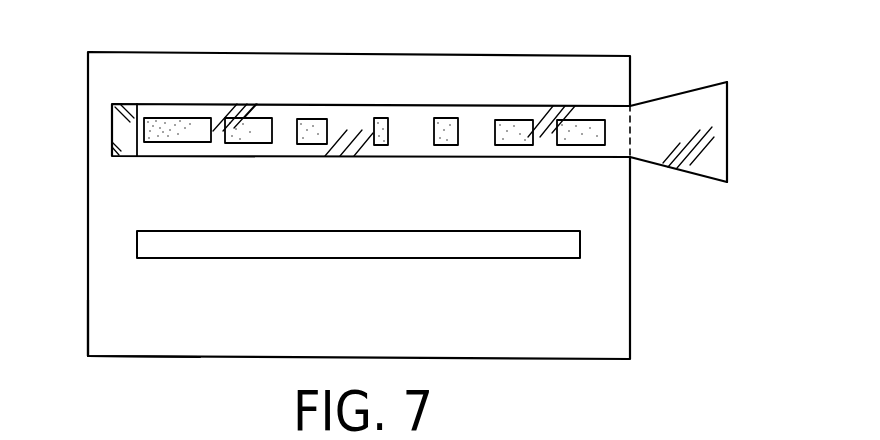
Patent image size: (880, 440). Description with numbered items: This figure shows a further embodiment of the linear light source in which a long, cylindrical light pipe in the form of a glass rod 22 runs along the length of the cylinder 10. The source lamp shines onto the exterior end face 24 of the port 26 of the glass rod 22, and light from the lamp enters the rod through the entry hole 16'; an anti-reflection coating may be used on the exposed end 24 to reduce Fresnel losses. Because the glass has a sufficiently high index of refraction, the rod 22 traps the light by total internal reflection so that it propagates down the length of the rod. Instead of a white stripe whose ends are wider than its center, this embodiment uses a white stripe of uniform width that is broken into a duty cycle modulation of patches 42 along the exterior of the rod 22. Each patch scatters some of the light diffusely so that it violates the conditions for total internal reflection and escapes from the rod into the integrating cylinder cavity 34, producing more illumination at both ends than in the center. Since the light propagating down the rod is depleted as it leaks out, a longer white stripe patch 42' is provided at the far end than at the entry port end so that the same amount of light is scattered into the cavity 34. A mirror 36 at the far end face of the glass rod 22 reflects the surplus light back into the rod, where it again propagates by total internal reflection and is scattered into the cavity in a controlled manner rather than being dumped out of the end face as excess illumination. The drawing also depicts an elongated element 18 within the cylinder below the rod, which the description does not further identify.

The cylinder 10 is at (548, 54).
The entry hole 16' is at (678, 106).
The slot 18 is at (474, 248).
The glass rod 22 is at (427, 157).
The exterior end face 24 is at (727, 137).
The port 26 is at (680, 163).
The integrating cylinder cavity 34 is at (100, 325).
The mirror 36 is at (132, 104).
The patches 42 is at (360, 167).
The longer white stripe patch 42' is at (211, 167).